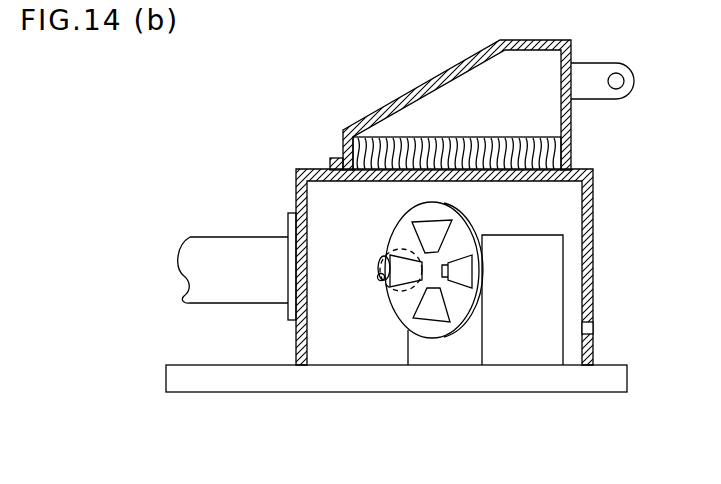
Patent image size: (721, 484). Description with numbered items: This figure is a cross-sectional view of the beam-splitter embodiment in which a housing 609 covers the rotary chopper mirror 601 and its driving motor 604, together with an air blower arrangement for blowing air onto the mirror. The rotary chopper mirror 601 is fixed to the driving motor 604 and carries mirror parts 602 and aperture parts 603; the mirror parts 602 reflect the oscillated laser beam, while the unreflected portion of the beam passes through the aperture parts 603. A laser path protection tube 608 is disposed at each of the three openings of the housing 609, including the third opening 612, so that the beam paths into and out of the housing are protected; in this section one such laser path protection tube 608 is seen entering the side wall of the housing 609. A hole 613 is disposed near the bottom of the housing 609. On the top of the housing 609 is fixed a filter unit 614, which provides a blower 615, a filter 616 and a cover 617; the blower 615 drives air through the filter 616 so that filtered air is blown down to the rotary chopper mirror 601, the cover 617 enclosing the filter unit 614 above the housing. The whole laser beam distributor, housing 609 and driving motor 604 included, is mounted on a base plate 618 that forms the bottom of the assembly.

The rotary chopper mirror 601 is at (392, 243).
The mirror parts 602 is at (460, 246).
The aperture parts 603 is at (437, 225).
The driving motor 604 is at (550, 277).
The laser path protection tube 608 is at (208, 237).
The housing 609 is at (587, 207).
The third opening 612 is at (382, 282).
The hole 613 is at (587, 330).
The filter unit 614 is at (537, 60).
The blower 615 is at (633, 80).
The filter 616 is at (546, 150).
The cover 617 is at (418, 90).
The base plate 618 is at (613, 383).